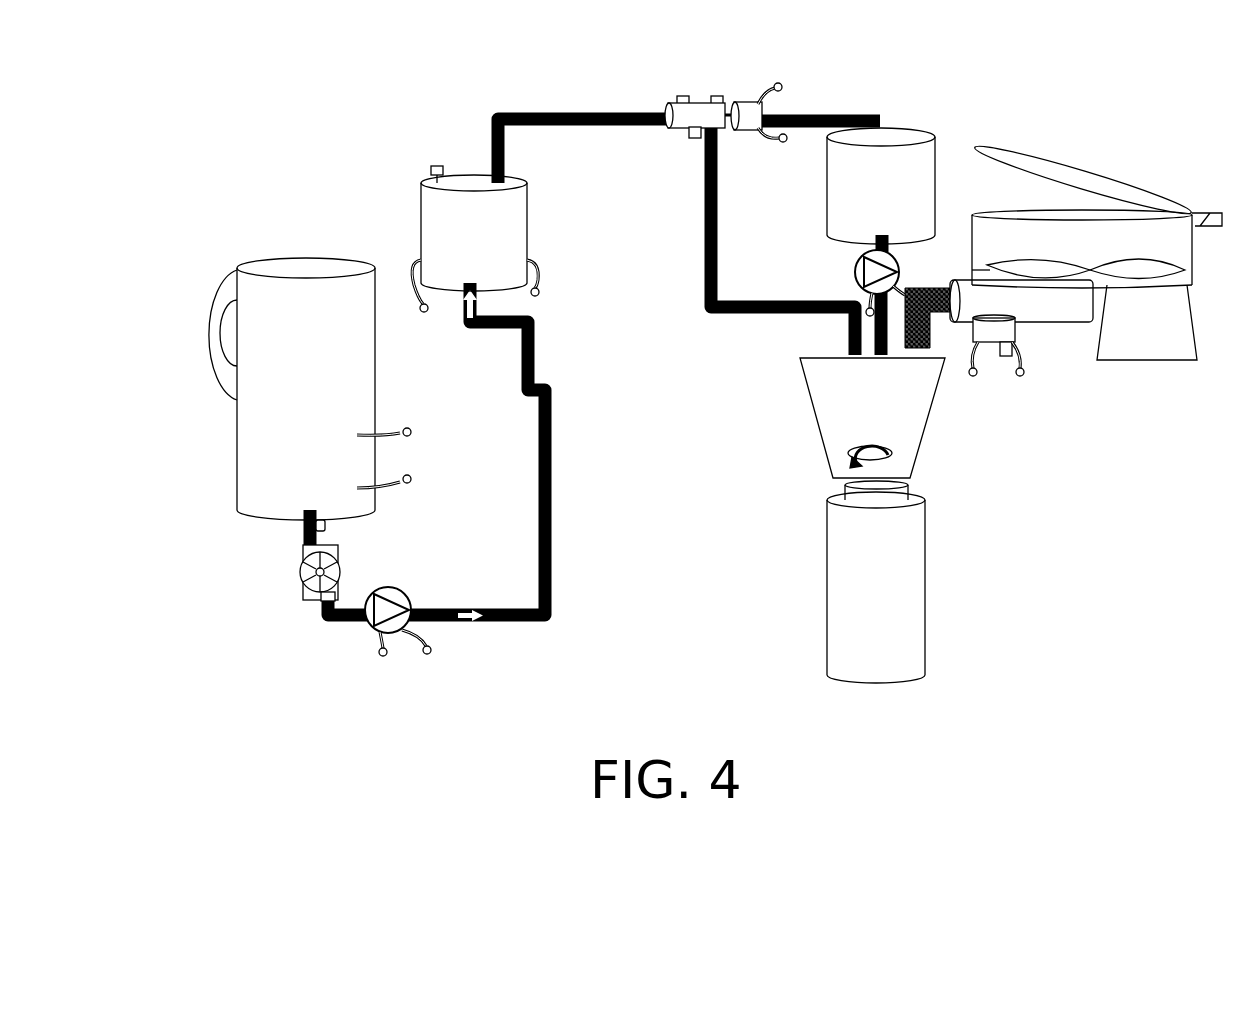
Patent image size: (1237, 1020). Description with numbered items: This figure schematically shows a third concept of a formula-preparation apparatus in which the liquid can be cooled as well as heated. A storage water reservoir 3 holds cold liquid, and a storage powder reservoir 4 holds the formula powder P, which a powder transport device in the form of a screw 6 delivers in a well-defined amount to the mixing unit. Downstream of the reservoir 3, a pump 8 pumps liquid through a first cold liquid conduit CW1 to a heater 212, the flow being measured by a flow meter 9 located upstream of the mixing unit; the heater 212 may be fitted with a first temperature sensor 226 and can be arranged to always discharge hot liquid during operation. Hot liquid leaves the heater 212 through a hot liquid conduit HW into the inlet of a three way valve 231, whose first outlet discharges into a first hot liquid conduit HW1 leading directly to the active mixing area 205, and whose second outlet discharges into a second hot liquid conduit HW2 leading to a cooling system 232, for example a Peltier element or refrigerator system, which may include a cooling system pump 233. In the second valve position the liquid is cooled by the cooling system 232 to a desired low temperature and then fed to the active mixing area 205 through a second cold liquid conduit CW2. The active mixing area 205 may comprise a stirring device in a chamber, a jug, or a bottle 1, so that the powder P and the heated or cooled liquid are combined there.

The bottle 1 is at (869, 598).
The storage water reservoir 3 is at (299, 395).
The storage powder reservoir 4 is at (1130, 238).
The screw 6 is at (1050, 312).
The pump 8 is at (395, 630).
The flow meter 9 is at (308, 580).
The active mixing area 205 is at (833, 410).
The heater 212 is at (454, 245).
The first temperature sensor 226 is at (436, 166).
The three way valve 231 is at (698, 103).
The cooling system 232 is at (861, 195).
The cooling system pump 233 is at (856, 274).
The hot liquid conduit HW is at (535, 113).
The first hot liquid conduit HW1 is at (738, 316).
The second hot liquid conduit HW2 is at (832, 115).
The first cold liquid conduit CW1 is at (548, 492).
The second cold liquid conduit CW2 is at (880, 358).
The powder P is at (937, 290).